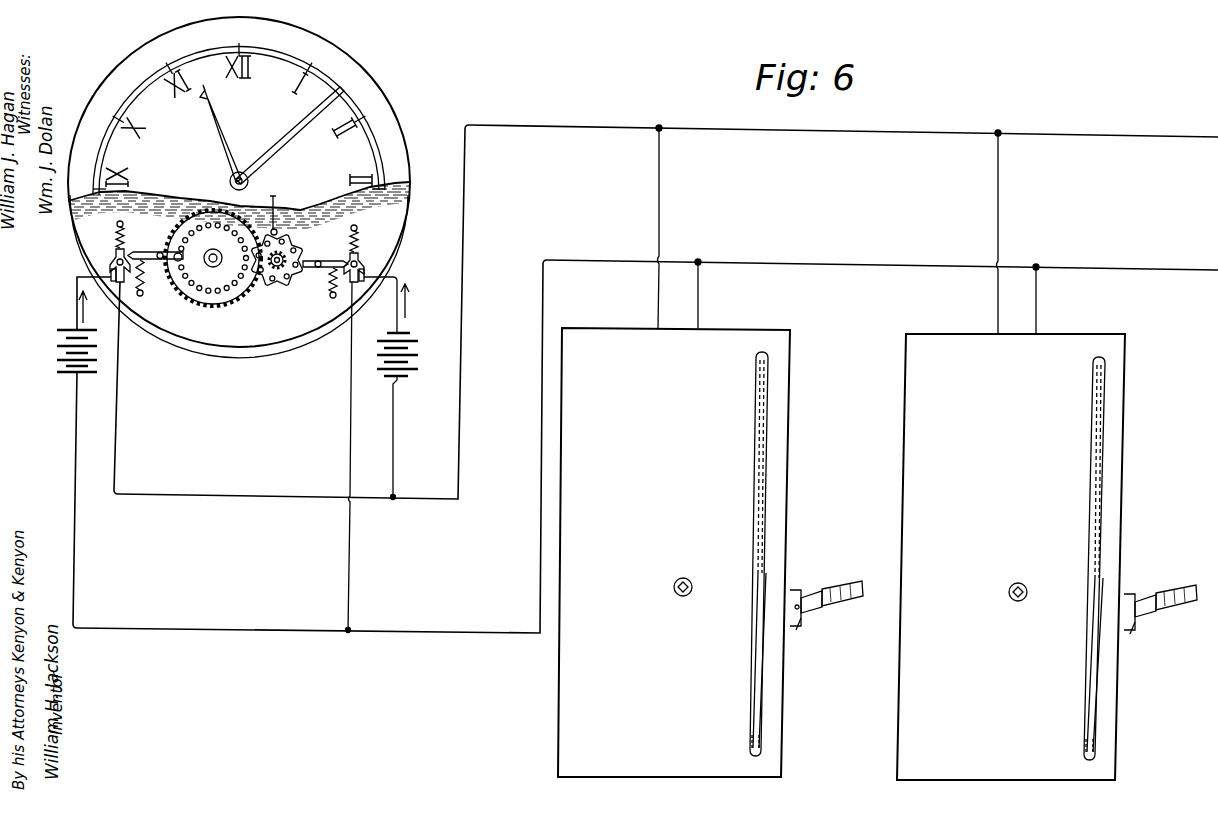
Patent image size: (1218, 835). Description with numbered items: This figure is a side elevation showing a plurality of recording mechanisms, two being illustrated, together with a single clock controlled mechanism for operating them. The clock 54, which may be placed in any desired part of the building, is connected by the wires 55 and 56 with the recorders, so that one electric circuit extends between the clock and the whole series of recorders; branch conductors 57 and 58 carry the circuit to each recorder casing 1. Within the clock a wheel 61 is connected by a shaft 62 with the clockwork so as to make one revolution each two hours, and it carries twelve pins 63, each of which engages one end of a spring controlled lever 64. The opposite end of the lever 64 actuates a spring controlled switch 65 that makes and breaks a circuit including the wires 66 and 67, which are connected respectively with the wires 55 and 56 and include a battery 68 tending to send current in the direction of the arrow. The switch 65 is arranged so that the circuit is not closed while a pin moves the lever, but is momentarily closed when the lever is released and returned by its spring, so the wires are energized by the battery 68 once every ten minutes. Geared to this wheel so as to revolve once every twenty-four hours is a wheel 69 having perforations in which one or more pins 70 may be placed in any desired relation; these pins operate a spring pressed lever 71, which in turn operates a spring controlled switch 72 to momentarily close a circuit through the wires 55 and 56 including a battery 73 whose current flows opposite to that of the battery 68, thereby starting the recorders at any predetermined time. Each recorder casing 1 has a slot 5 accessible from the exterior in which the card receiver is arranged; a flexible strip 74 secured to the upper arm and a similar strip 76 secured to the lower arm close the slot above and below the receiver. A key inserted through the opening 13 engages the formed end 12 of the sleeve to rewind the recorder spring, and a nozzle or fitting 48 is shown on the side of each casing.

The casing 1 is at (790, 422).
The slot 5 is at (760, 673).
The end of sleeve 12 is at (685, 578).
The opening 13 is at (680, 597).
The nozzle 48 is at (845, 586).
The clock 54 is at (379, 92).
The wire 55 is at (464, 341).
The wire 56 is at (541, 396).
The branch conductor 57 is at (660, 180).
The branch conductor 58 is at (699, 292).
The wheel 61 is at (299, 241).
The shaft 62 is at (272, 196).
The pins 63 is at (277, 290).
The spring controlled lever 64 is at (328, 260).
The spring controlled switch 65 is at (360, 255).
The wire 66 is at (395, 275).
The wire 67 is at (392, 415).
The battery 68 is at (416, 342).
The wheel 69 is at (206, 300).
The pins 70 is at (181, 254).
The spring pressed lever 71 is at (150, 258).
The spring controlled switch 72 is at (108, 254).
The battery 73 is at (57, 352).
The flexible strip 74 is at (766, 497).
The flexible strip 76 is at (758, 742).